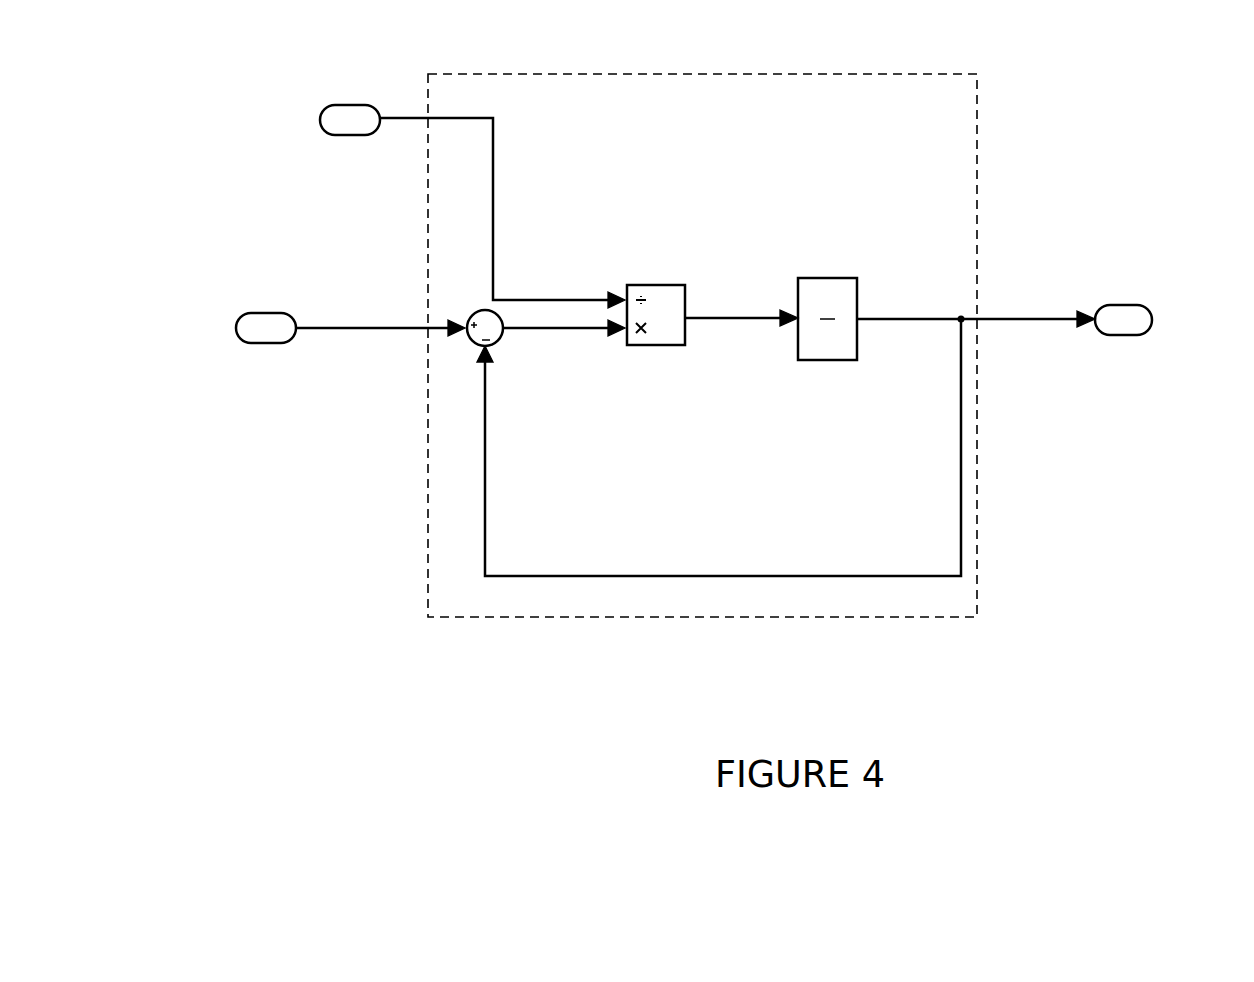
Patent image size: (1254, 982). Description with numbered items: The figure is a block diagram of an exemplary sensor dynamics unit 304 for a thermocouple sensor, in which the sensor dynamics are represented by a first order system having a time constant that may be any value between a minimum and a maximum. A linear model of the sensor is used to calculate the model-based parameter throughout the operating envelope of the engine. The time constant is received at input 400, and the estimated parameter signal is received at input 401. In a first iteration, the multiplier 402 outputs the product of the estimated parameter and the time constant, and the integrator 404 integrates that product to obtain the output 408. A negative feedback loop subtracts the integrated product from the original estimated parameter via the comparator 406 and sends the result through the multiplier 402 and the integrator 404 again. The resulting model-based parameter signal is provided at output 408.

The sensor dynamics unit 304 is at (733, 73).
The input 400 is at (348, 105).
The input 401 is at (256, 311).
The multiplier 402 is at (652, 285).
The integrator 404 is at (823, 278).
The comparator 406 is at (504, 338).
The output 408 is at (1115, 305).